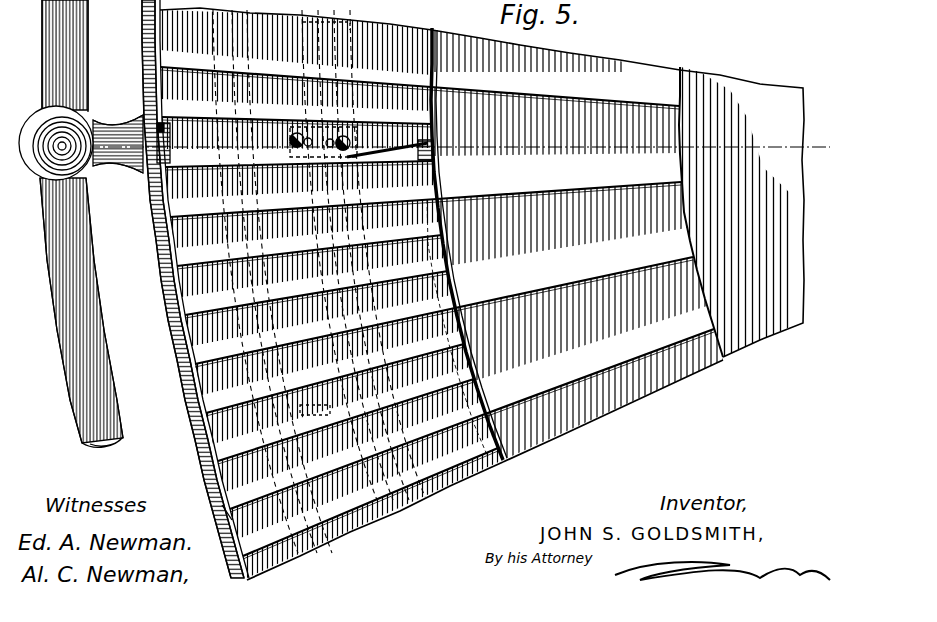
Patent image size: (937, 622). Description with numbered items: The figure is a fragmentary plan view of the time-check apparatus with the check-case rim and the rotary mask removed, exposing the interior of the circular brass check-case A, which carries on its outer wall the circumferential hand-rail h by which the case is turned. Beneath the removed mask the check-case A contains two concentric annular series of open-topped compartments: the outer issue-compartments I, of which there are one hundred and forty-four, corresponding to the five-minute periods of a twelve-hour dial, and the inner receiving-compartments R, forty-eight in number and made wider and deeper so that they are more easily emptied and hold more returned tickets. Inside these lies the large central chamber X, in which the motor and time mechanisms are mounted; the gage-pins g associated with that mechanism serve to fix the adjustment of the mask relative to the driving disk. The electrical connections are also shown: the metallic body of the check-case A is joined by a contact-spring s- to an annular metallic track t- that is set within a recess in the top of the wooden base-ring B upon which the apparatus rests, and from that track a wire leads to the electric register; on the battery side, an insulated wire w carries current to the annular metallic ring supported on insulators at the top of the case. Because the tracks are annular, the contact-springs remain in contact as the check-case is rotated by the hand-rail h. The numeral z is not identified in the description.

The check-case A is at (166, 53).
The base-ring B is at (170, 313).
The hand-rail h is at (81, 223).
The gage-pins g is at (222, 510).
The issue-compartments I is at (331, 294).
The receiving-compartments R is at (577, 246).
The central chamber X is at (741, 212).
The hub piece z is at (425, 155).
The insulated wire w is at (387, 149).
The contact-spring s- is at (300, 411).
The metallic track t- is at (243, 243).